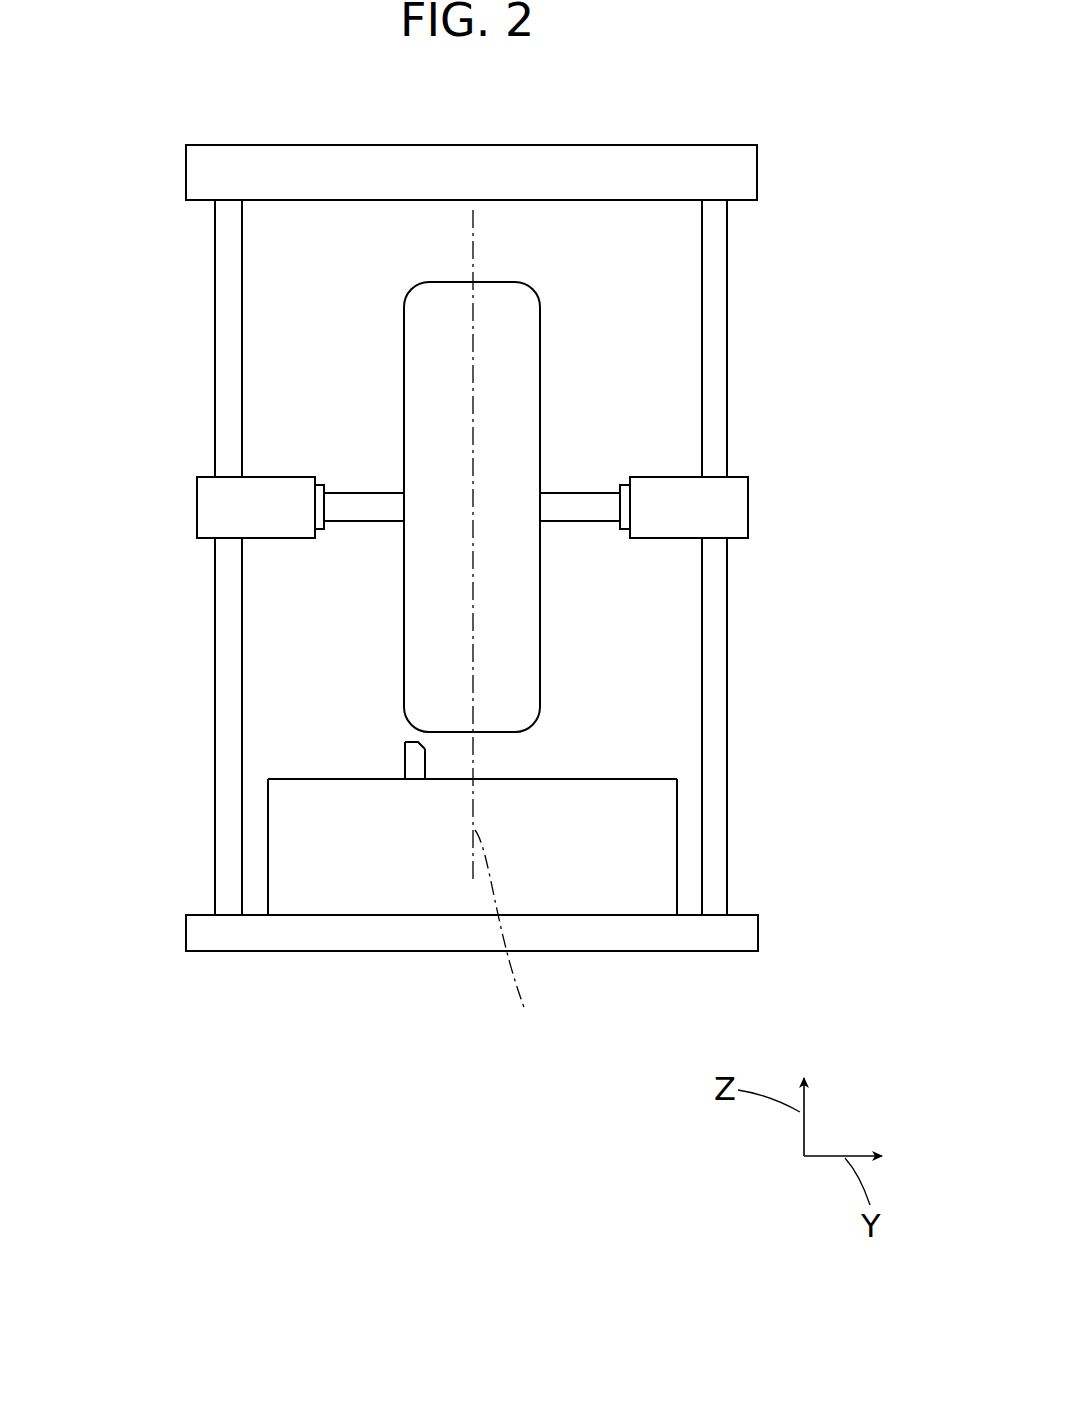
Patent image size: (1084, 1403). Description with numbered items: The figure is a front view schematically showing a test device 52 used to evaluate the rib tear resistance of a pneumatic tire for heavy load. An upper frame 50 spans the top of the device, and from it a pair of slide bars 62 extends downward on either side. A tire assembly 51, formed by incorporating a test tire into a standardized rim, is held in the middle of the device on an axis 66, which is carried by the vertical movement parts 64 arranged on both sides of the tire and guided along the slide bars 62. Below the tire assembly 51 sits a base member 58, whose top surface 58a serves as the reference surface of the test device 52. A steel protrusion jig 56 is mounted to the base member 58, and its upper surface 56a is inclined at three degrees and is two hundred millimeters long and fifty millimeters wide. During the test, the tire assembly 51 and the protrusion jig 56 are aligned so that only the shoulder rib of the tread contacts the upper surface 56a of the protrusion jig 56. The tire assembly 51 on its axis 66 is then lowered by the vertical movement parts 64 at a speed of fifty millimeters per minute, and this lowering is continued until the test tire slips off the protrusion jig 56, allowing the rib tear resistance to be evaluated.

The upper frame plate 50 is at (740, 175).
The tire assembly 51 is at (516, 300).
The test device 52 is at (780, 266).
The protrusion jig 56 is at (266, 712).
The upper surface of protrusion jig 56a is at (413, 738).
The base member 58 is at (556, 813).
The top surface of base member 58a is at (648, 778).
The slide bar 62 is at (233, 362).
The vertical movement part 64 is at (218, 505).
The axis 66 is at (587, 505).